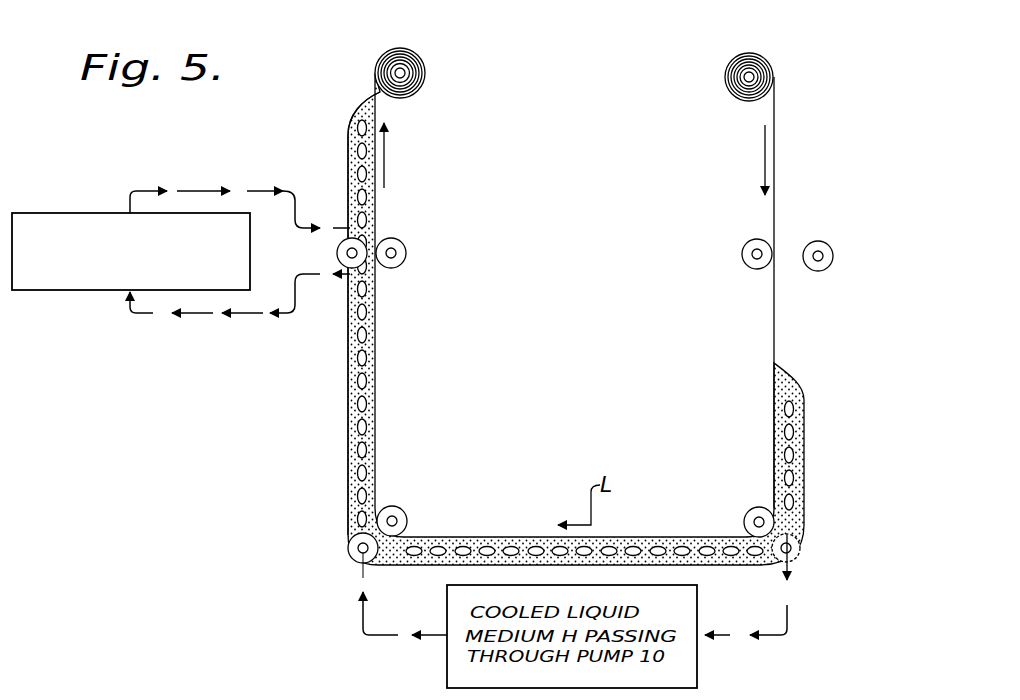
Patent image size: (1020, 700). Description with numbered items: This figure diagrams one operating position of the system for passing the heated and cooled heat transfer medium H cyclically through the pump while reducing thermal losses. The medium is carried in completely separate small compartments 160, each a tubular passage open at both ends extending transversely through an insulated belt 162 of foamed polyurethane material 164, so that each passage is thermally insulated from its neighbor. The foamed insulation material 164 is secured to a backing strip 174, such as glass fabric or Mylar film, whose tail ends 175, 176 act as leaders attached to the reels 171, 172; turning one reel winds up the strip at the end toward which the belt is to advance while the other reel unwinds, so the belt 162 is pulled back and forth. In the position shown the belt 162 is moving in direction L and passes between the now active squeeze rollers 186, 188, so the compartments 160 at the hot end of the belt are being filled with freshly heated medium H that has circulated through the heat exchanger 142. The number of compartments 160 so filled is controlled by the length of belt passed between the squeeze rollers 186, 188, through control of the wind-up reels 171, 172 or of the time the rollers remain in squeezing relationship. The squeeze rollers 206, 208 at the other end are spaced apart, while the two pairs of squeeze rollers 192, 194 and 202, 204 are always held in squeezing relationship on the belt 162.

The heat exchanger 142 is at (50, 212).
The compartments 160 is at (355, 118).
The insulated belt 162 is at (381, 389).
The foamed polyurethane material 164 is at (352, 345).
The reel 171 is at (412, 80).
The reel 172 is at (738, 56).
The backing strip 174 is at (776, 411).
The tail end 175 is at (374, 84).
The tail end 176 is at (776, 123).
The squeeze roller 186 is at (406, 262).
The squeeze roller 188 is at (338, 255).
The squeeze roller 192 is at (406, 509).
The squeeze roller 194 is at (350, 548).
The squeeze roller 202 is at (752, 508).
The squeeze roller 204 is at (800, 553).
The squeeze roller 206 is at (826, 270).
The squeeze roller 208 is at (742, 262).